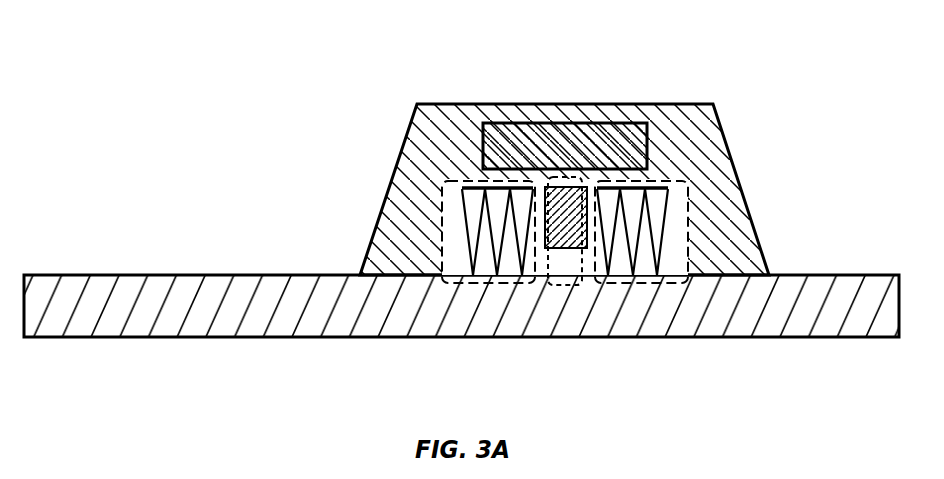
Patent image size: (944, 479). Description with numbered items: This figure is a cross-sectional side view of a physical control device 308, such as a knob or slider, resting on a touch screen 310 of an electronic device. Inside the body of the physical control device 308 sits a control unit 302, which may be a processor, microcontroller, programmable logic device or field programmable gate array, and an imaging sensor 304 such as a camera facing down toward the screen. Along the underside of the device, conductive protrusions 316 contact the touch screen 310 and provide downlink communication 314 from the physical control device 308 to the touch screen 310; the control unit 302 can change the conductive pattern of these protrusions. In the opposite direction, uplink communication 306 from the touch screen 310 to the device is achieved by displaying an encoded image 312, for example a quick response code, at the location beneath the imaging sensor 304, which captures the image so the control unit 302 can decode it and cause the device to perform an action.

The control unit 302 is at (557, 204).
The imaging sensor 304 is at (523, 123).
The uplink communication 306 is at (567, 284).
The physical control device 308 is at (722, 128).
The touch screen 310 is at (853, 275).
The encoded image 312 is at (563, 266).
The downlink communication 314 is at (490, 283).
The conductive protrusions 316 is at (465, 231).